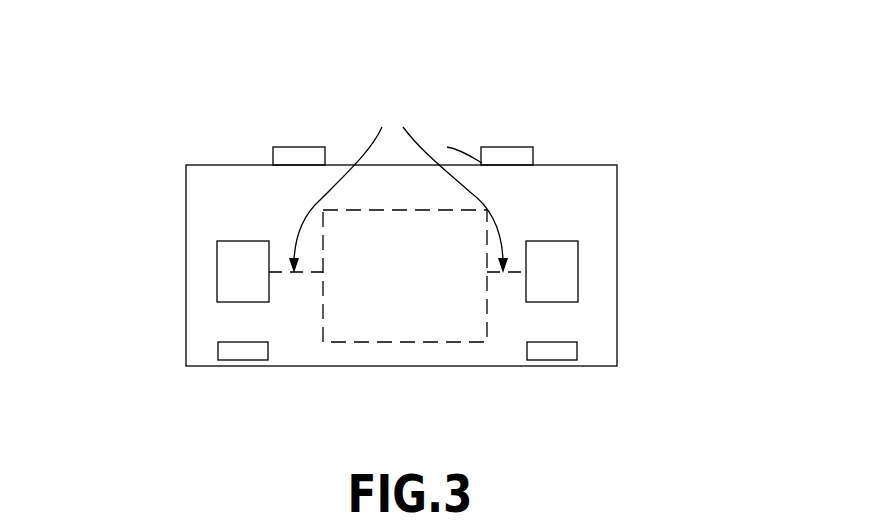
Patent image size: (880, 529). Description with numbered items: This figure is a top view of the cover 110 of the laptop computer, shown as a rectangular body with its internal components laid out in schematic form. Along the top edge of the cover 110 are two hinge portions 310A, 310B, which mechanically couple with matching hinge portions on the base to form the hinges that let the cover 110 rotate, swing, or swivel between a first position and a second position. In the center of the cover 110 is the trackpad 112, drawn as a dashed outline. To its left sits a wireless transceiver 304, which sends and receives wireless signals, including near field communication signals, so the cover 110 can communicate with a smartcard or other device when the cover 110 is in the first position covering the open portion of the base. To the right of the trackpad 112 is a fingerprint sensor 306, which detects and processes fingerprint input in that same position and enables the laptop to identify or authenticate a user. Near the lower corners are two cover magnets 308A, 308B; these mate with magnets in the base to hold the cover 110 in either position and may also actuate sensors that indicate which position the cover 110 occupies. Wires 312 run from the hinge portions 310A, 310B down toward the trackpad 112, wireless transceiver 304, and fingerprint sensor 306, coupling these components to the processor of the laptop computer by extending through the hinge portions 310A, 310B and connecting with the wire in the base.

The cover 110 is at (113, 182).
The trackpad 112 is at (390, 298).
The wireless transceiver 304 is at (217, 273).
The fingerprint sensor 306 is at (578, 272).
The cover magnet 308A is at (252, 360).
The cover magnet 308B is at (555, 360).
The hinge portion 310A is at (298, 147).
The hinge portion 310B is at (502, 147).
The wire 312 is at (455, 136).